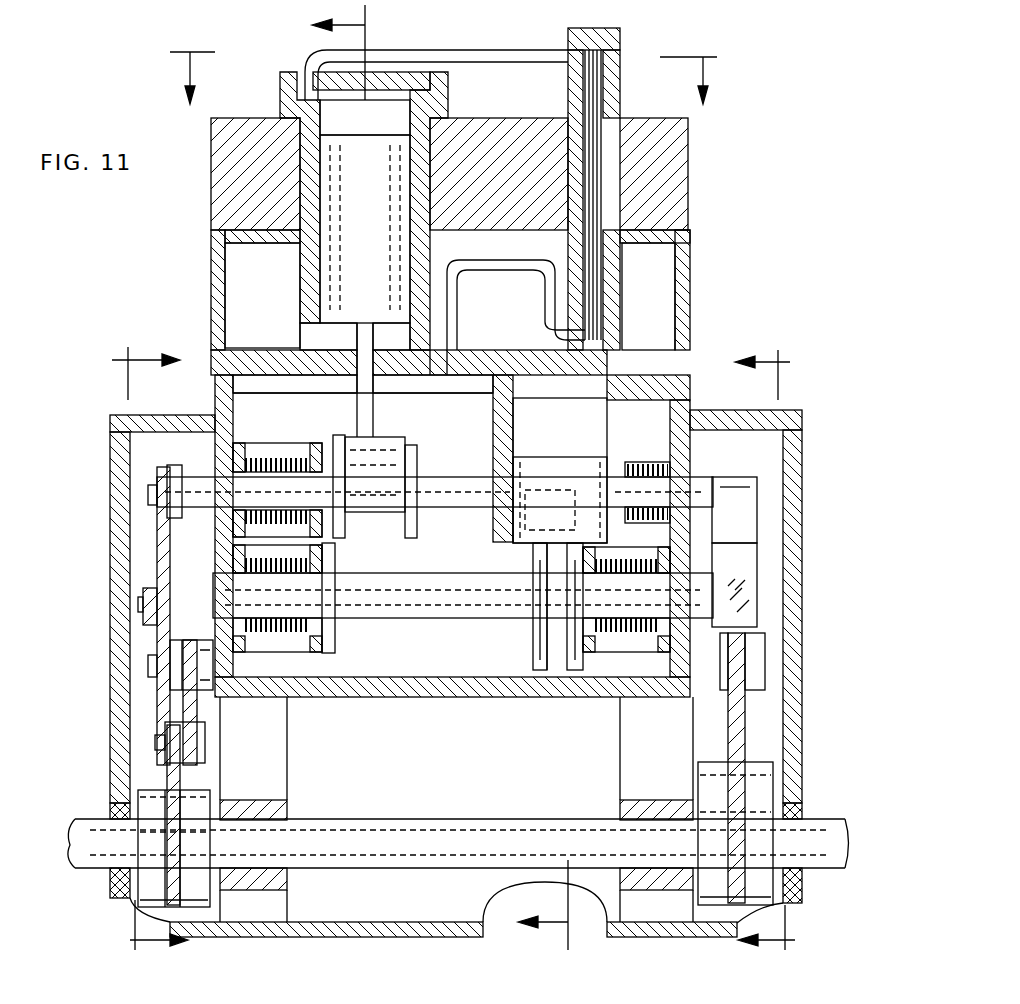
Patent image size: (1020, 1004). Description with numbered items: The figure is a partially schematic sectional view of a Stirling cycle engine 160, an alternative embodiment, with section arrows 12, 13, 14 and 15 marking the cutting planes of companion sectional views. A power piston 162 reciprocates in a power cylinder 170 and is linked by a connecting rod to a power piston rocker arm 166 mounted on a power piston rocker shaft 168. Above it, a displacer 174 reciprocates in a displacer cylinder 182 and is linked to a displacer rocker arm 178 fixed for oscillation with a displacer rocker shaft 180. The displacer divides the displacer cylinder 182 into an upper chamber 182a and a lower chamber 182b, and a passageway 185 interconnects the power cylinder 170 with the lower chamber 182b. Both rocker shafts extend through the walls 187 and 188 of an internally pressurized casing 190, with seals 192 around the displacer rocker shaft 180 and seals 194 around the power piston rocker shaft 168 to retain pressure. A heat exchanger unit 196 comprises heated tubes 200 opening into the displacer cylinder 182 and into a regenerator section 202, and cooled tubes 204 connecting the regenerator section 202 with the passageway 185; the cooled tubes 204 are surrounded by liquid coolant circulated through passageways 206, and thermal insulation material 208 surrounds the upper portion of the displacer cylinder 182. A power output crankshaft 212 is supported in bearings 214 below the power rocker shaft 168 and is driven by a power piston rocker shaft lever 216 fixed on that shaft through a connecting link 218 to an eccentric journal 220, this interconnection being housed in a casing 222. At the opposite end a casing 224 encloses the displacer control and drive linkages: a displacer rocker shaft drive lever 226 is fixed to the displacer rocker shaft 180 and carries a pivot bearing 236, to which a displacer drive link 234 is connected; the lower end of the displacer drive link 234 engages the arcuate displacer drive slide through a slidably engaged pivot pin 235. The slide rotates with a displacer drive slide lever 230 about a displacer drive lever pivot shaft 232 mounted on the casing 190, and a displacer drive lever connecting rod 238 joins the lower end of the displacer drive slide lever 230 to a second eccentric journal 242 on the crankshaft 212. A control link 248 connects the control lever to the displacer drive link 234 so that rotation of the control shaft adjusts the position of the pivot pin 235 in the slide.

The section line 12- 12 is at (454, 479).
The section line 13- 13 is at (444, 67).
The section line 14- 14 is at (779, 645).
The section line 15- 15 is at (144, 645).
The Stirling cycle engine 160 is at (186, 263).
The power piston 162 is at (572, 480).
The power piston rocker arm 166 is at (585, 578).
The power piston rocker shaft 168 is at (213, 583).
The power cylinder 170 is at (605, 402).
The displacer 174 is at (385, 244).
The displacer rocker arm 178 is at (405, 538).
The displacer rocker shaft 180 is at (198, 477).
The displacer cylinder 182 is at (310, 330).
The upper chamber 182a is at (390, 126).
The lower chamber 182b is at (312, 345).
The passageway 185 is at (432, 372).
The wall 187 is at (245, 398).
The wall 188 is at (690, 400).
The internally pressurized casing 190 is at (235, 405).
The seals 192 is at (252, 460).
The seals 194 is at (275, 640).
The heat exchanger unit 196 is at (630, 30).
The heated tubes 200 is at (512, 50).
The regenerator section 202 is at (608, 84).
The cooled tubes 204 is at (500, 270).
The coolant passageways 206 is at (225, 312).
The thermal insulation material 208 is at (245, 118).
The power output crankshaft 212 is at (68, 840).
The bearings 214 is at (112, 808).
The power piston rocker shaft lever 216 is at (753, 522).
The connecting link 218 is at (745, 718).
The eccentric journal 220 is at (730, 775).
The casing 222 is at (802, 600).
The casing 224 is at (110, 508).
The displacer rocker shaft drive lever 226 is at (167, 470).
The displacer drive slide lever 230 is at (197, 705).
The displacer drive lever pivot shaft 232 is at (208, 650).
The displacer drive link 234 is at (157, 530).
The pivot pin 235 is at (148, 665).
The pivot bearing 236 is at (148, 495).
The displacer drive lever connecting rod 238 is at (180, 775).
The second eccentric journal 242 is at (180, 832).
The control link 248 is at (143, 600).